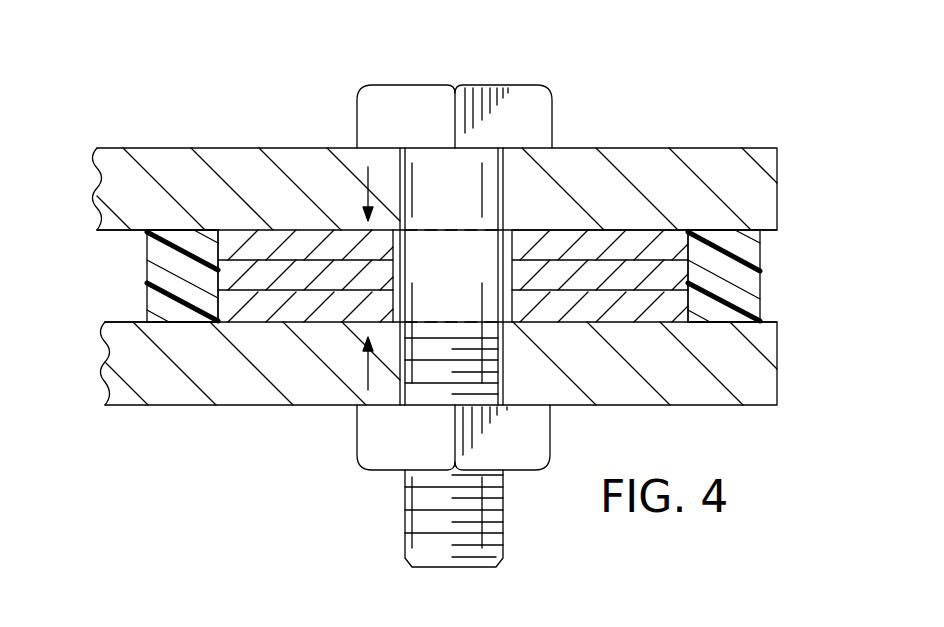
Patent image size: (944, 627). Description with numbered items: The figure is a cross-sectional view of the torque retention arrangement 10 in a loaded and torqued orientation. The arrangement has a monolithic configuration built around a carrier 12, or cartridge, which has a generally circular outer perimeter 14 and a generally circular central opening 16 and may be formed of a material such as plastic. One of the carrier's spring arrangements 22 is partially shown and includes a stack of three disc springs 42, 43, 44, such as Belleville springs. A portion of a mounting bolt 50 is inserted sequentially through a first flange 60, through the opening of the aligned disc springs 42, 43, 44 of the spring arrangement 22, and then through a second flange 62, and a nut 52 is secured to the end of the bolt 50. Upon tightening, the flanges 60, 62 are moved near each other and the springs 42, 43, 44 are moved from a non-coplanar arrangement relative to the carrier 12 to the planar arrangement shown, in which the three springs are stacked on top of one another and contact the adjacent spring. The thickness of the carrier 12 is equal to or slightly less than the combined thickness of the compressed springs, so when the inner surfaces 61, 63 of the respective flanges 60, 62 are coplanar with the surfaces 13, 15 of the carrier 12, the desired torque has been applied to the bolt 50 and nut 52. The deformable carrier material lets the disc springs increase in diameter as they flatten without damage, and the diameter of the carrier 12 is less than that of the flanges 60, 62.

The torque retention arrangement 10 is at (119, 304).
The carrier 12 is at (134, 276).
The surface of the carrier 13 is at (178, 240).
The outer perimeter 14 is at (762, 278).
The surface of the carrier 15 is at (183, 323).
The central opening 16 is at (145, 273).
The spring arrangement 22 is at (622, 222).
The disc spring 42 is at (285, 245).
The disc spring 43 is at (661, 285).
The disc spring 44 is at (292, 306).
The mounting bolt 50 is at (513, 100).
The nut 52 is at (537, 432).
The first flange 60 is at (755, 180).
The inner surface of the first flange 61 is at (765, 234).
The second flange 62 is at (758, 377).
The inner surface of the second flange 63 is at (763, 320).